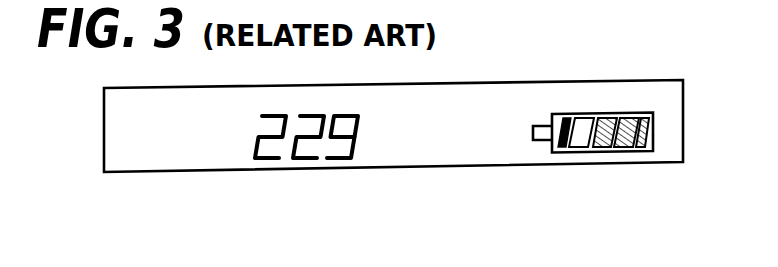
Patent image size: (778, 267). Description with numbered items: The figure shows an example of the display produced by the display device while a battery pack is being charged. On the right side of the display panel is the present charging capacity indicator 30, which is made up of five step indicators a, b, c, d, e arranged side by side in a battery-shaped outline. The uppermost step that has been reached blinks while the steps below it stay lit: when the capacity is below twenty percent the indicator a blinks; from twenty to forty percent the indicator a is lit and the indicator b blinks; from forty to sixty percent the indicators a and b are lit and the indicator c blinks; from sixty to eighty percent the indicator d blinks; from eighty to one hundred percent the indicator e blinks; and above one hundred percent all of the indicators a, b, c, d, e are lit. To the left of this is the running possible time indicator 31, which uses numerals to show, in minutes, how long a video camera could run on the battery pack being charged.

The present charging capacity indicator 30 is at (597, 133).
The running possible time indicator 31 is at (325, 156).
The indicator a is at (646, 117).
The indicator b is at (629, 117).
The indicator c is at (607, 117).
The indicator d is at (585, 117).
The indicator e is at (563, 117).